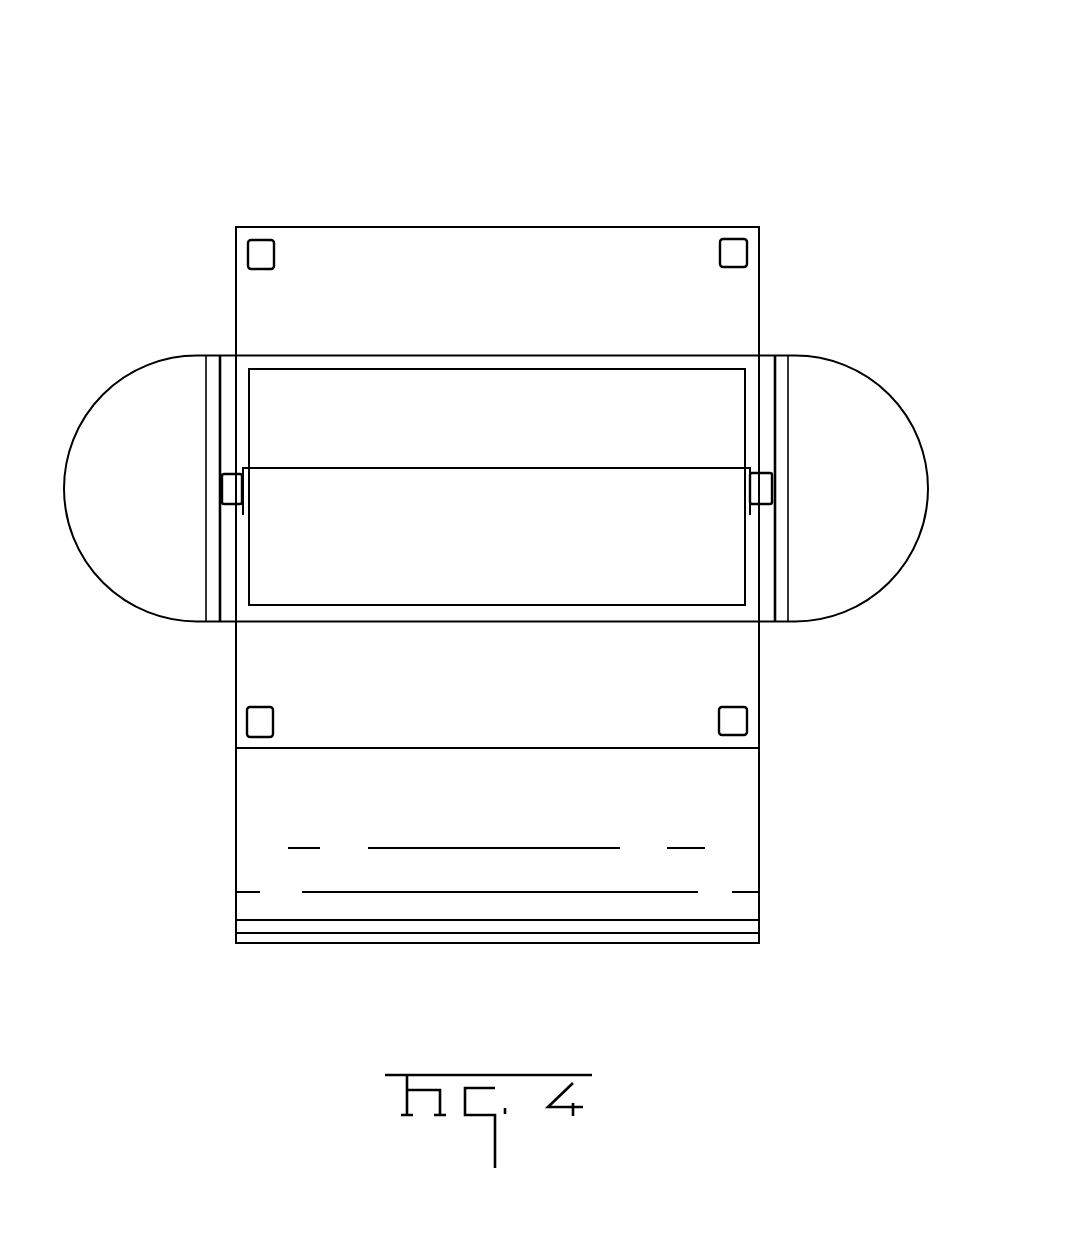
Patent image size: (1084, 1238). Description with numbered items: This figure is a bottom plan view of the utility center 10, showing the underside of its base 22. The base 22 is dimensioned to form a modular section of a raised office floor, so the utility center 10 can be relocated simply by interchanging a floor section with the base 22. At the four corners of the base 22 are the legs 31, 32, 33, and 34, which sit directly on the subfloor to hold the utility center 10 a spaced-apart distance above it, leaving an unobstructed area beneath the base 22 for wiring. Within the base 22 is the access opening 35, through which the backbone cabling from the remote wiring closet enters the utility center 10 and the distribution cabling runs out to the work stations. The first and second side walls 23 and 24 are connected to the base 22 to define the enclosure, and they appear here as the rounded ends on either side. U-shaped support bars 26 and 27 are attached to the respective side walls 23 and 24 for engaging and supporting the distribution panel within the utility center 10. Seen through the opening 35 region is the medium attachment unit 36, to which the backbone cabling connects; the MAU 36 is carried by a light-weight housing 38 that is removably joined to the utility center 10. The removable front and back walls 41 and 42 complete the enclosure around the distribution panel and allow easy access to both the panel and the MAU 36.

The utility center 10 is at (188, 167).
The base 22 is at (482, 240).
The first side wall 23 is at (88, 412).
The second side wall 24 is at (888, 388).
The U-shaped support bar 26 is at (220, 485).
The U-shaped support bar 27 is at (773, 490).
The leg 31 is at (257, 722).
The leg 32 is at (748, 723).
The leg 33 is at (737, 243).
The leg 34 is at (268, 255).
The access opening 35 is at (635, 367).
The medium attachment unit 36 is at (508, 562).
The MAU housing 38 is at (245, 839).
The front wall 41 is at (543, 360).
The back wall 42 is at (487, 617).